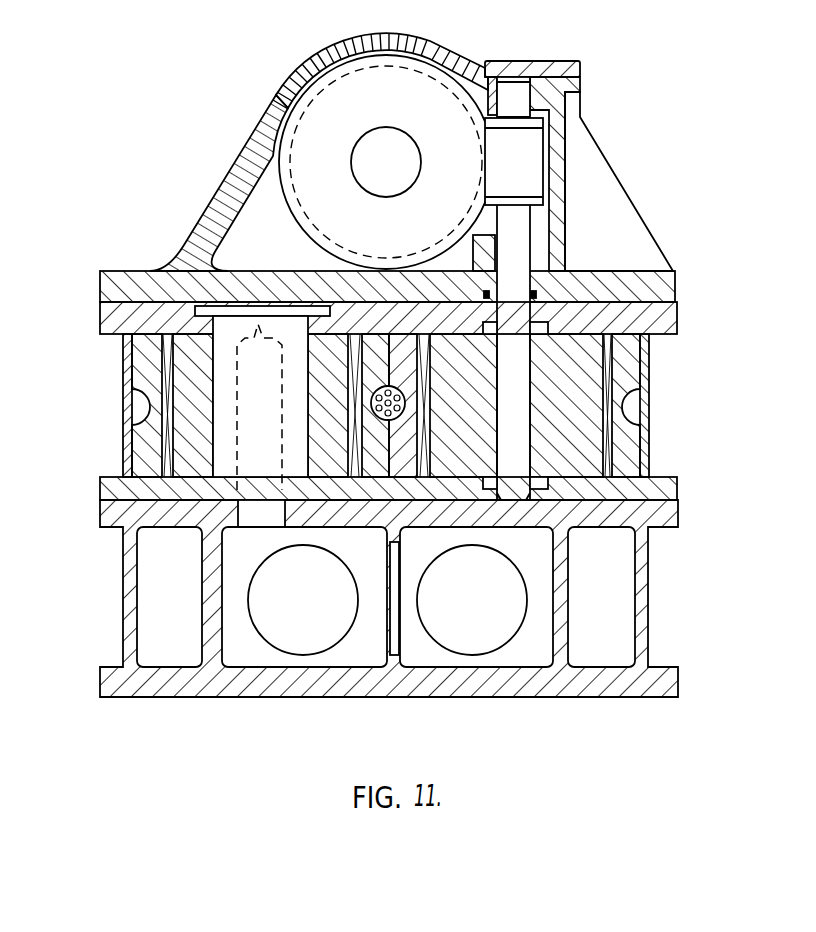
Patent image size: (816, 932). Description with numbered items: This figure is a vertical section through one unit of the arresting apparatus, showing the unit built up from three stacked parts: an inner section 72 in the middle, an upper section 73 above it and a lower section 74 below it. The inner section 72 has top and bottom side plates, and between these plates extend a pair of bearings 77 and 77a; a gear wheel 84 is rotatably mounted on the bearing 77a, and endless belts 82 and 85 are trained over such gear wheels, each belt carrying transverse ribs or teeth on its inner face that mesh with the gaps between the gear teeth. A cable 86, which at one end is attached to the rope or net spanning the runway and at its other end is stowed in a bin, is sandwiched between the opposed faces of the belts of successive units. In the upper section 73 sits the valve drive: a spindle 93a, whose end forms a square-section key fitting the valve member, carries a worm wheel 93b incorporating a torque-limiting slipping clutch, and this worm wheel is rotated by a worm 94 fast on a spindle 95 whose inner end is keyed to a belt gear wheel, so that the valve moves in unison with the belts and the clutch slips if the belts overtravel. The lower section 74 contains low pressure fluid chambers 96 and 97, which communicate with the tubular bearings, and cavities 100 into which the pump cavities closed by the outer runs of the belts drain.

The upper section 73 is at (647, 192).
The spindle 93a is at (377, 133).
The worm wheel 93b is at (293, 174).
The worm 94 is at (498, 133).
The spindle 95 is at (522, 155).
The inner section 72 is at (658, 378).
The bearing 77 is at (548, 332).
The endless belt 85 is at (127, 370).
The gear wheel 84 is at (183, 427).
The endless belt 82 is at (627, 442).
The bearing 77a is at (218, 455).
The cable 86 is at (371, 405).
The lower section 74 is at (653, 597).
The cavity 100 is at (148, 608).
The low pressure fluid chamber 97 is at (325, 638).
The low pressure fluid chamber 96 is at (452, 640).